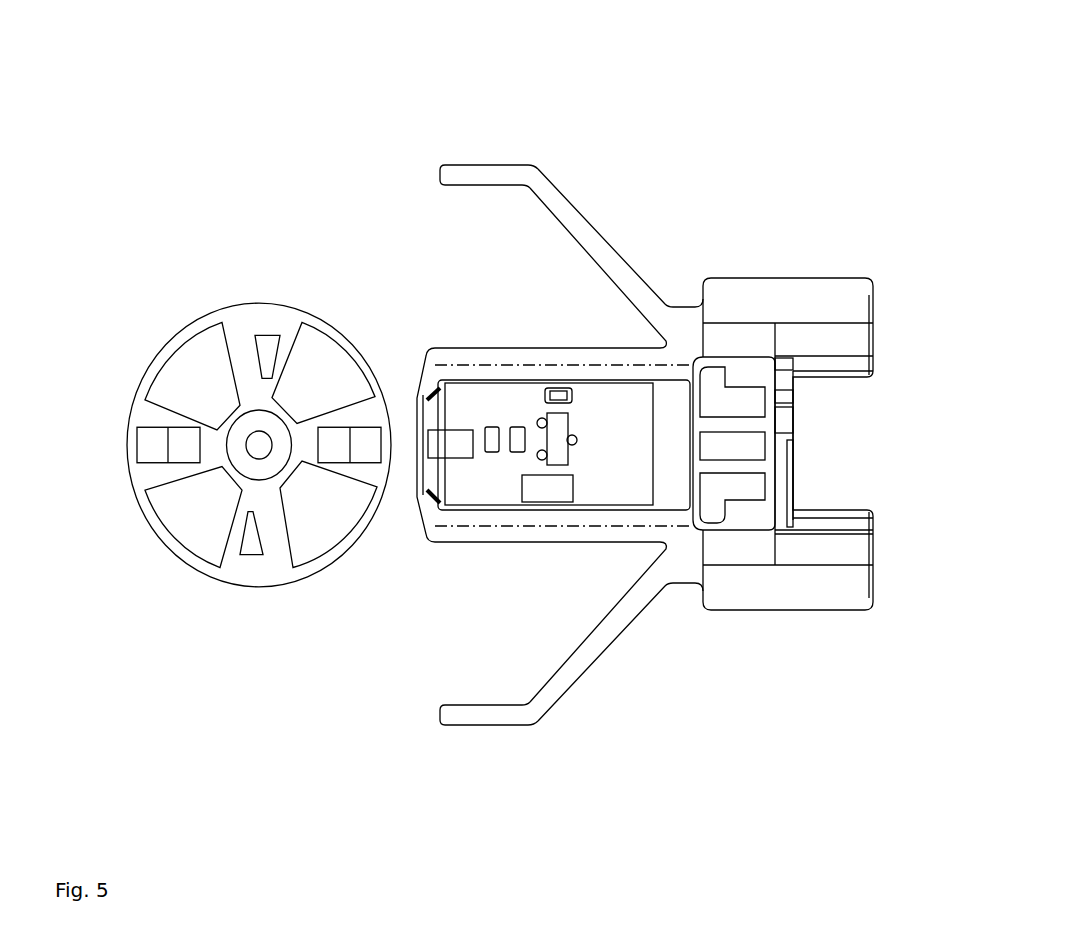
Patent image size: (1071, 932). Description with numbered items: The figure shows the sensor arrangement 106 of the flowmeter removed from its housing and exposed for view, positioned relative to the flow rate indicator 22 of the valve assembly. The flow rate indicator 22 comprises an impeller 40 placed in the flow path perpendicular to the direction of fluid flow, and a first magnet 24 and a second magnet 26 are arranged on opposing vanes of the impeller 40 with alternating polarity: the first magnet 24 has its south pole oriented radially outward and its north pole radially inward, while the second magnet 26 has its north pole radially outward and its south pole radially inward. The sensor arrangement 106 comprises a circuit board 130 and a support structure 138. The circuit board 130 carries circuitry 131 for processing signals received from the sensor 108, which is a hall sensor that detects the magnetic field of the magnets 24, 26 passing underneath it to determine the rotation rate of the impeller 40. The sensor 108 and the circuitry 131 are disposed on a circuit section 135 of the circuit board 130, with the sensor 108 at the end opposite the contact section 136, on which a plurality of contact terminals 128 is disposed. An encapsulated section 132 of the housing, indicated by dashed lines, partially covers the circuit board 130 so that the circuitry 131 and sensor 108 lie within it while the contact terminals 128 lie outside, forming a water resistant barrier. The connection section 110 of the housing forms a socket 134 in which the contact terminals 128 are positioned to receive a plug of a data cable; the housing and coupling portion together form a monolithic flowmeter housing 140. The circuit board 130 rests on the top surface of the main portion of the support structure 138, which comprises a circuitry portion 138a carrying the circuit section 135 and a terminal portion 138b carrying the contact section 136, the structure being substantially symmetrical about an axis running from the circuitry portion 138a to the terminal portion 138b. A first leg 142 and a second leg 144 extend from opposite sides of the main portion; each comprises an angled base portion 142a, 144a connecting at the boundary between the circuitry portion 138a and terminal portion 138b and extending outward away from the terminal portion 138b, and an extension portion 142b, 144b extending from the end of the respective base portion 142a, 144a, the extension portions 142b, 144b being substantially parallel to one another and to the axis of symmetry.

The flow rate indicator 22 is at (180, 275).
The first magnet 24 is at (107, 495).
The second magnet 26 is at (343, 387).
The impeller 40 is at (245, 315).
The sensor arrangement 106 is at (482, 577).
The sensor 108 is at (447, 443).
The connection section 110 is at (828, 228).
The contact terminals 128 is at (732, 397).
The circuit board 130 is at (545, 528).
The circuitry 131 is at (495, 482).
The encapsulated section 132 is at (510, 362).
The socket 134 is at (835, 437).
The circuit section 135 is at (607, 462).
The contact section 136 is at (753, 372).
The support structure 138 is at (680, 328).
The circuitry portion 138a is at (470, 355).
The terminal portion 138b is at (820, 293).
The flowmeter housing 140 is at (551, 348).
The first leg 142 is at (545, 707).
The base portion 142a is at (598, 660).
The extension portion 142b is at (480, 722).
The second leg 144 is at (518, 175).
The base portion 144a is at (598, 245).
The extension portion 144b is at (463, 172).